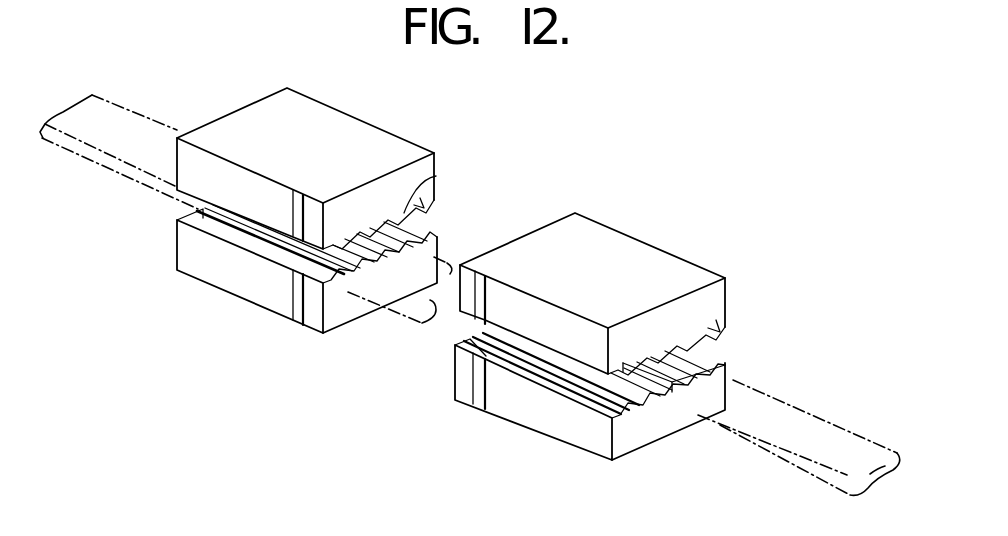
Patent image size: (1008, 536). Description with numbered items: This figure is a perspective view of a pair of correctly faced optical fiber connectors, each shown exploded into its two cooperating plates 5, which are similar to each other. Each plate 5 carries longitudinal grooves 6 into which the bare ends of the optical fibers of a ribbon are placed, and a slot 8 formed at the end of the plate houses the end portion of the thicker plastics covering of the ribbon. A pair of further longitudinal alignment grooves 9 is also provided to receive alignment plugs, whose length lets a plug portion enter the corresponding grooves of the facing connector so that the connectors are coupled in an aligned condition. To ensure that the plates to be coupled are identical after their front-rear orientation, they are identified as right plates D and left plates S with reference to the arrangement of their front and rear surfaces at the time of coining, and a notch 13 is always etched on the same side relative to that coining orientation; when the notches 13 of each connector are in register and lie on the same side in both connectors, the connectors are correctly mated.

The cooperating plate 5 is at (267, 103).
The left plate S is at (223, 280).
The right plate D is at (363, 123).
The notch 13 is at (290, 317).
The longitudinal groove 6 is at (435, 175).
The longitudinal alignment groove 9 is at (420, 198).
The slot 8 is at (649, 403).